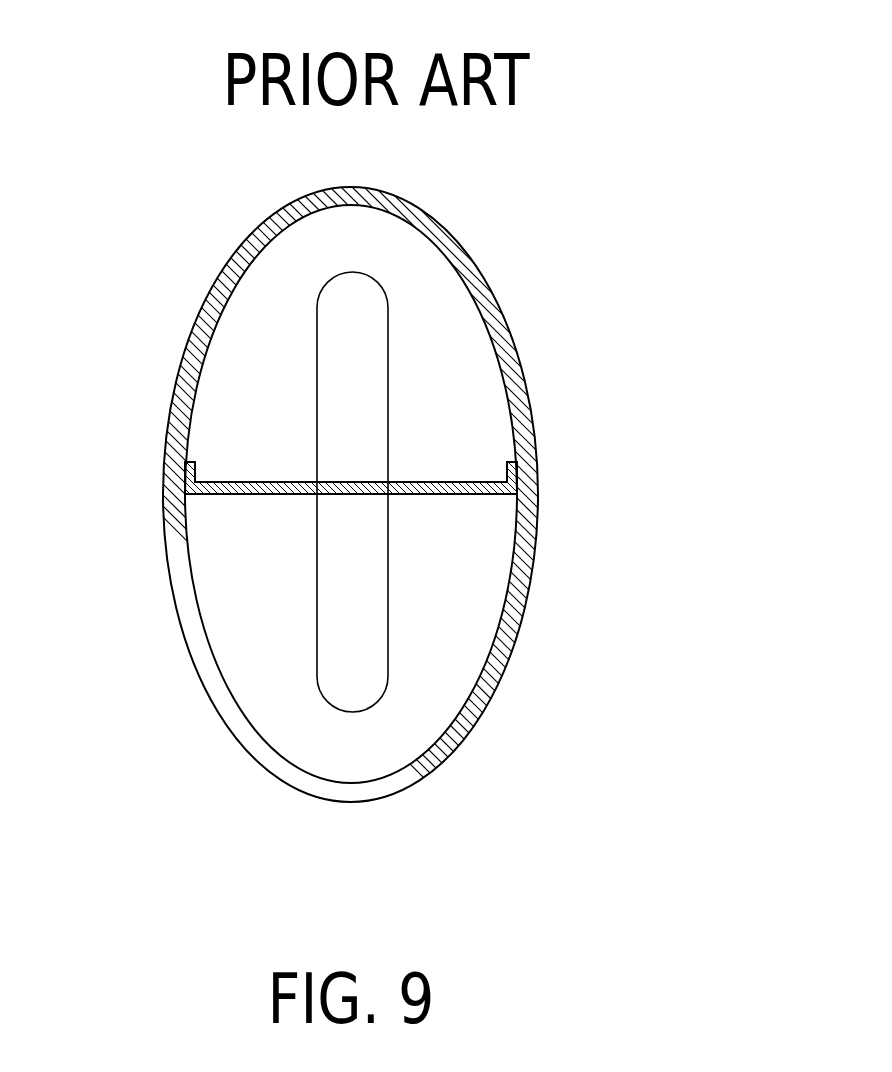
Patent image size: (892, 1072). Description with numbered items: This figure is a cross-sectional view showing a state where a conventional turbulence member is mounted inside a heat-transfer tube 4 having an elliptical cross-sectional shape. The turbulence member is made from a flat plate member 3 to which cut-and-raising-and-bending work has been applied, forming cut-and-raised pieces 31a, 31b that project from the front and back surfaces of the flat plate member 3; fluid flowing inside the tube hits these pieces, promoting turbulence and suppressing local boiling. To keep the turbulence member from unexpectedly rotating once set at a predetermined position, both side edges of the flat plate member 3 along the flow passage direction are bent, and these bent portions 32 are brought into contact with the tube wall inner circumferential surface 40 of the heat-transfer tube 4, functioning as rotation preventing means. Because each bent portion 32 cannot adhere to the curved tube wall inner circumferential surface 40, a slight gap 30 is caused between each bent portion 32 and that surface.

The heat-transfer tube 4 is at (443, 221).
The tube wall inner circumferential surface 40 is at (313, 220).
The flat plate member 3 is at (471, 482).
The bent portions 32 is at (194, 466).
The gap 30 is at (188, 496).
The cut-and-raised piece 31a is at (327, 333).
The cut-and-raised piece 31b is at (377, 680).